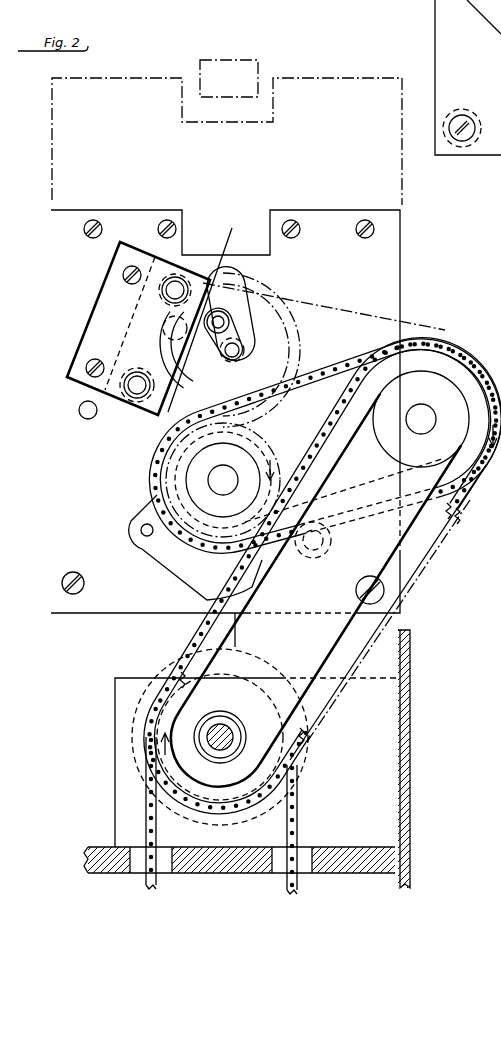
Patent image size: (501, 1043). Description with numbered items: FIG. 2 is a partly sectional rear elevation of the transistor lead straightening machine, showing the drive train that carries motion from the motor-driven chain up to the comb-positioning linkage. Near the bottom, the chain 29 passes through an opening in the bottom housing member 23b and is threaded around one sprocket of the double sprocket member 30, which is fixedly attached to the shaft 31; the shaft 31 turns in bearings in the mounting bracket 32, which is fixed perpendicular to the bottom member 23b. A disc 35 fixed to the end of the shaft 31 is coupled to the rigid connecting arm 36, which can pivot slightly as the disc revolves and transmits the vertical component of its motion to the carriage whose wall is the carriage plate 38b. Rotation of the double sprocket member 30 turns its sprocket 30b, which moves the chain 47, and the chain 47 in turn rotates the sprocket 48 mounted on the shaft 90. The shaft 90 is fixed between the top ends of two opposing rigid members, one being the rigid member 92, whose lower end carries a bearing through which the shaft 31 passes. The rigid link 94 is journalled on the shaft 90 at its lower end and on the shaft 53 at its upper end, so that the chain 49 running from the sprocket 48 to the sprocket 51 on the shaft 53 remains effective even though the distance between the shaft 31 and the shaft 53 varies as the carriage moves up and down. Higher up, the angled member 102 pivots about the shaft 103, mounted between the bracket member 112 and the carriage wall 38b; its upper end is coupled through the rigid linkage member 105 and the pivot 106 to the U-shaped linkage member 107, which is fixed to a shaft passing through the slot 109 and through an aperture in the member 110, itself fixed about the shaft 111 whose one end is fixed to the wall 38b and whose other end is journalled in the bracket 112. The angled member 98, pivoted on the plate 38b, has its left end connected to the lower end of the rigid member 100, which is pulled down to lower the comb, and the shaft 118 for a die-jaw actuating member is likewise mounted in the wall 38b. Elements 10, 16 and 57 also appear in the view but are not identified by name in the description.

The machine frame 10 is at (472, 74).
The conveyor 16 is at (496, 407).
The bottom housing member 23b is at (88, 850).
The chain 29 is at (146, 810).
The double sprocket member 30 is at (305, 763).
The sprocket 30b is at (285, 746).
The shaft 31 is at (228, 730).
The mounting bracket 32 is at (130, 697).
The disc 35 is at (167, 673).
The connecting arm 36 is at (228, 622).
The carriage plate 38b is at (425, 205).
The chain 47 is at (469, 492).
The sprocket 48 is at (468, 380).
The chain 49 is at (372, 320).
The sprocket 51 is at (318, 318).
The shaft 53 is at (224, 475).
The motor 57 is at (228, 58).
The shaft 90 is at (424, 410).
The rigid member 92 is at (407, 513).
The rigid link 94 is at (322, 405).
The angled member 98 is at (195, 570).
The rigid member 100 is at (150, 497).
The angled member 102 is at (177, 418).
The shaft 103 is at (137, 380).
The rigid linkage member 105 is at (215, 370).
The pivot 106 is at (241, 351).
The rigid linkage member 107 is at (232, 322).
The slot 109 is at (246, 281).
The member 110 is at (232, 266).
The shaft 111 is at (177, 290).
The bracket member 112 is at (112, 292).
The shaft 118 is at (80, 415).